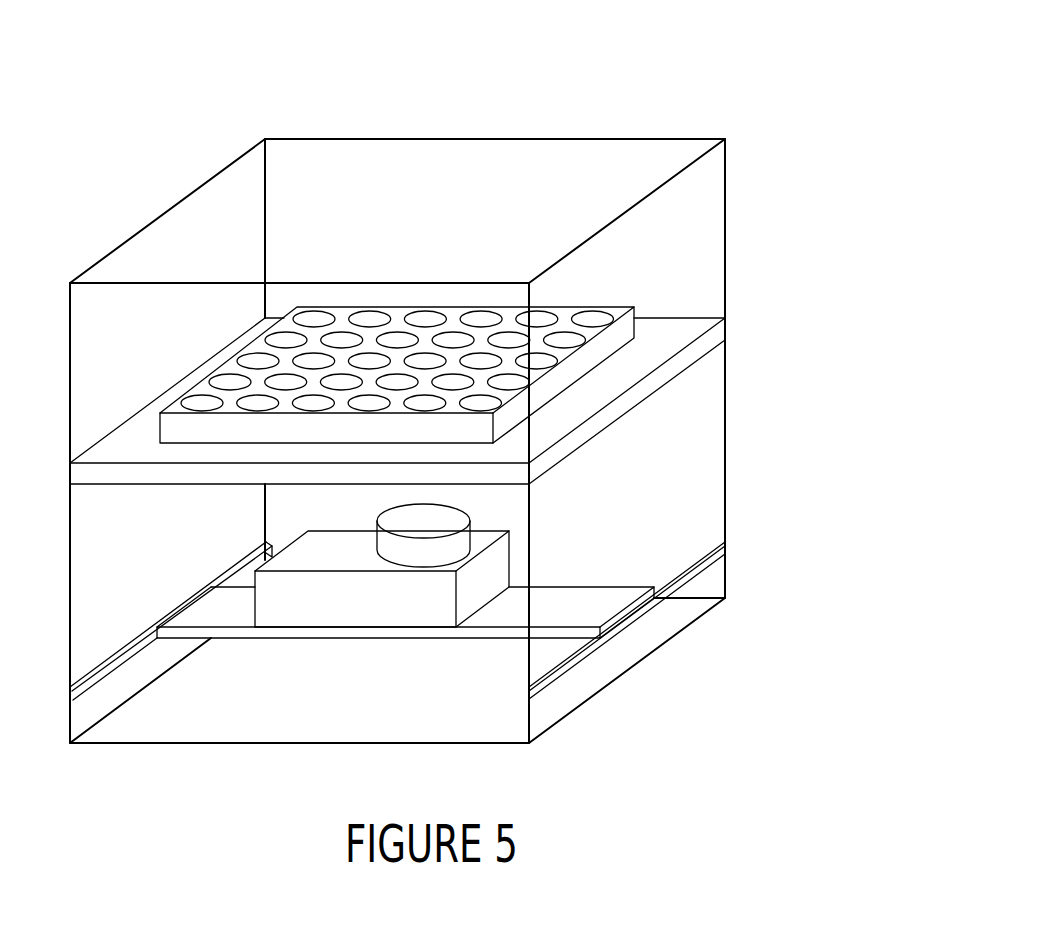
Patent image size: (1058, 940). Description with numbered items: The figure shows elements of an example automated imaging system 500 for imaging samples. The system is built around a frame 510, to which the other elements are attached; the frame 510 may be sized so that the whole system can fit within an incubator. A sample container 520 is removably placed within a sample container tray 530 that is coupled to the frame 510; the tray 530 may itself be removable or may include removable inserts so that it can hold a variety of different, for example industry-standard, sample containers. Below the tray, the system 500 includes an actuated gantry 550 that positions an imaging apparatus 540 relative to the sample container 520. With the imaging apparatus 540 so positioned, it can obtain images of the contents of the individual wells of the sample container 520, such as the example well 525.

The automated imaging system 500 is at (735, 88).
The frame 510 is at (726, 409).
The sample container 520 is at (397, 343).
The well 525 is at (595, 320).
The sample container tray 530 is at (672, 327).
The imaging apparatus 540 is at (370, 613).
The actuated gantry 550 is at (583, 654).